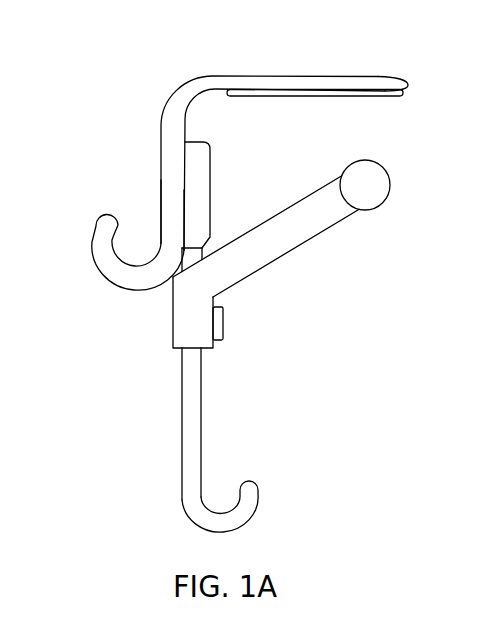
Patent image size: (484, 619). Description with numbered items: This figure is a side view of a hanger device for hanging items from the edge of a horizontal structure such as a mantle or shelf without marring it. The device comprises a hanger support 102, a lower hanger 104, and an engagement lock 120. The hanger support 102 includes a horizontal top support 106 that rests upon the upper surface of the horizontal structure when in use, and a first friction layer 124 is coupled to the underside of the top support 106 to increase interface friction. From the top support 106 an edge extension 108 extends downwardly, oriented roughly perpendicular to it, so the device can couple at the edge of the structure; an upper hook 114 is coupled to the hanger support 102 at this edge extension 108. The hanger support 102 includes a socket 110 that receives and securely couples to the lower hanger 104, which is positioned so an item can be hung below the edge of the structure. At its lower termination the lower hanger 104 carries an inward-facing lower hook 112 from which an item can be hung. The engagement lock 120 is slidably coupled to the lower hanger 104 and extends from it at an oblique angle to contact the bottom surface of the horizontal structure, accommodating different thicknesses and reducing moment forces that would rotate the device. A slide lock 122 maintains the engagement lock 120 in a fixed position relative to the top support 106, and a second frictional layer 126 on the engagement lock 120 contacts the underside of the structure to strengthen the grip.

The hanger support 102 is at (178, 93).
The lower hanger 104 is at (182, 408).
The top support 106 is at (337, 77).
The edge extension 108 is at (160, 158).
The socket 110 is at (211, 183).
The lower hook 112 is at (255, 482).
The upper hook 114 is at (98, 222).
The engagement lock 120 is at (300, 243).
The slide lock 122 is at (223, 335).
The first friction layer 124 is at (375, 95).
The second frictional layer 126 is at (378, 207).